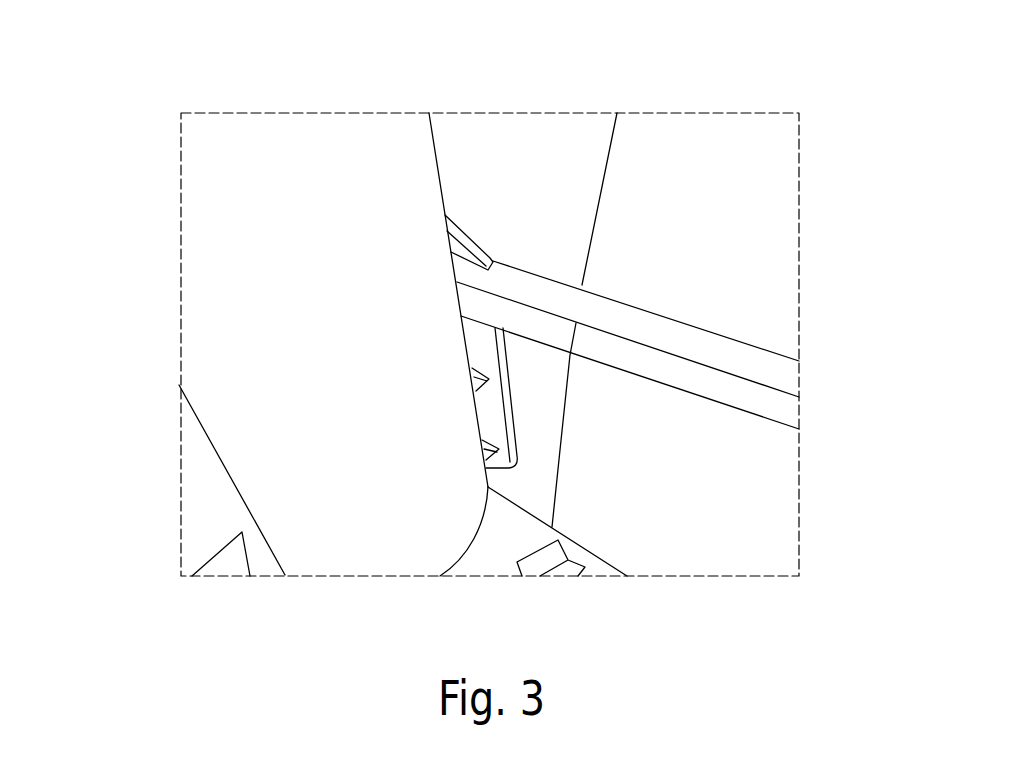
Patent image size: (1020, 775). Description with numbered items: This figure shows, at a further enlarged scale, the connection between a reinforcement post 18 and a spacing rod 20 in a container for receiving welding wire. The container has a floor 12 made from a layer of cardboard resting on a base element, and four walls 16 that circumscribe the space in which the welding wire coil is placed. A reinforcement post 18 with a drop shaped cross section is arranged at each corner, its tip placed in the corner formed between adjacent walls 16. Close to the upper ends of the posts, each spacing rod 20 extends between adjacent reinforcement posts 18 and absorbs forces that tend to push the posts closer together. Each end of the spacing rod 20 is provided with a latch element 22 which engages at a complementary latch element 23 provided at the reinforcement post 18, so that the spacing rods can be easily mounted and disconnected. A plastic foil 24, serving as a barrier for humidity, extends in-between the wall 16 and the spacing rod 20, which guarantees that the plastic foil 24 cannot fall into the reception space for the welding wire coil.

The floor 12 is at (495, 545).
The wall 16 is at (775, 232).
The reinforcement post 18 is at (197, 343).
The spacing rod 20 is at (772, 372).
The latch element 22 is at (458, 250).
The complementary latch element 23 is at (502, 425).
The plastic foil 24 is at (737, 168).